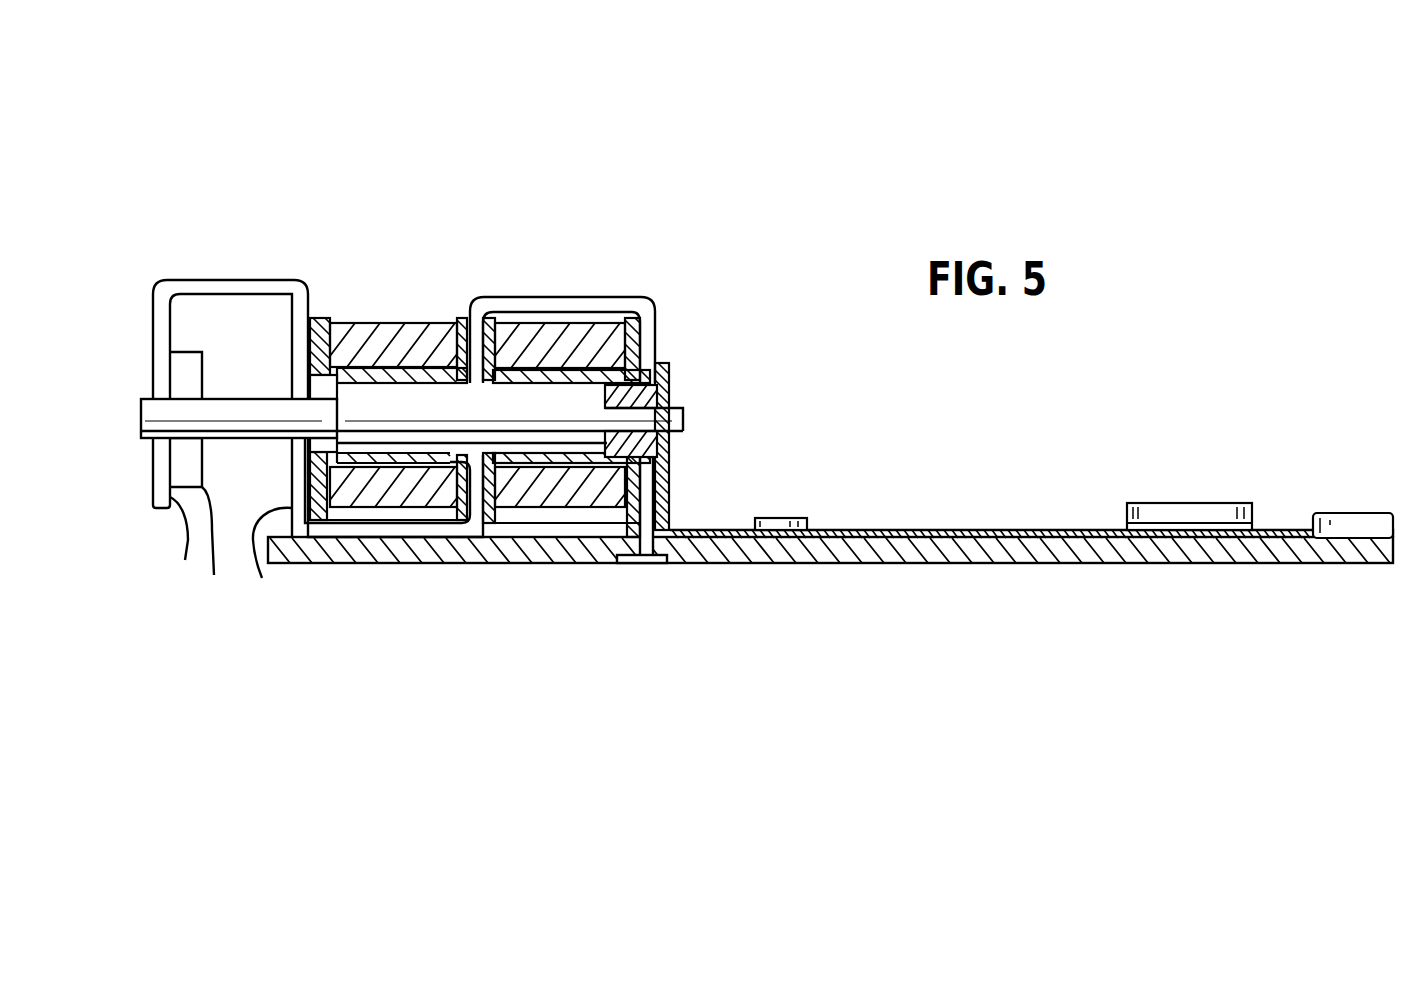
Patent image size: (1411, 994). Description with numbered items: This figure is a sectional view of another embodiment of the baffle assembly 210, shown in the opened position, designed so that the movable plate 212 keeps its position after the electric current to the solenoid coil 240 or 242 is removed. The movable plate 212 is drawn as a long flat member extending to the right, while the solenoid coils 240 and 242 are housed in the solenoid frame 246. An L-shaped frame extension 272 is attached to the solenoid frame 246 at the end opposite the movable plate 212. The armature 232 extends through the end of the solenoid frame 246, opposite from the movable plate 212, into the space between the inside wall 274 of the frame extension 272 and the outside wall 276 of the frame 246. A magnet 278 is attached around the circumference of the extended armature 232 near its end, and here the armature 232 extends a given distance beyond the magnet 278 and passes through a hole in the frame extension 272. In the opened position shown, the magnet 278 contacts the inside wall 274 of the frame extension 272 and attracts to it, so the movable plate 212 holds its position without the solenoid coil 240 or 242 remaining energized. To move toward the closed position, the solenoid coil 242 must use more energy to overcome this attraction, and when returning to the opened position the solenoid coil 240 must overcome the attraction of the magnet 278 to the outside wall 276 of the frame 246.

The baffle assembly 210 is at (444, 342).
The movable plate 212 is at (995, 525).
The armature 232 is at (512, 425).
The solenoid coil 240 is at (393, 327).
The solenoid coil 242 is at (607, 327).
The solenoid frame 246 is at (577, 297).
The frame extension 272 is at (233, 278).
The inside wall 274 is at (185, 560).
The outside wall 276 is at (262, 578).
The magnet 278 is at (214, 575).